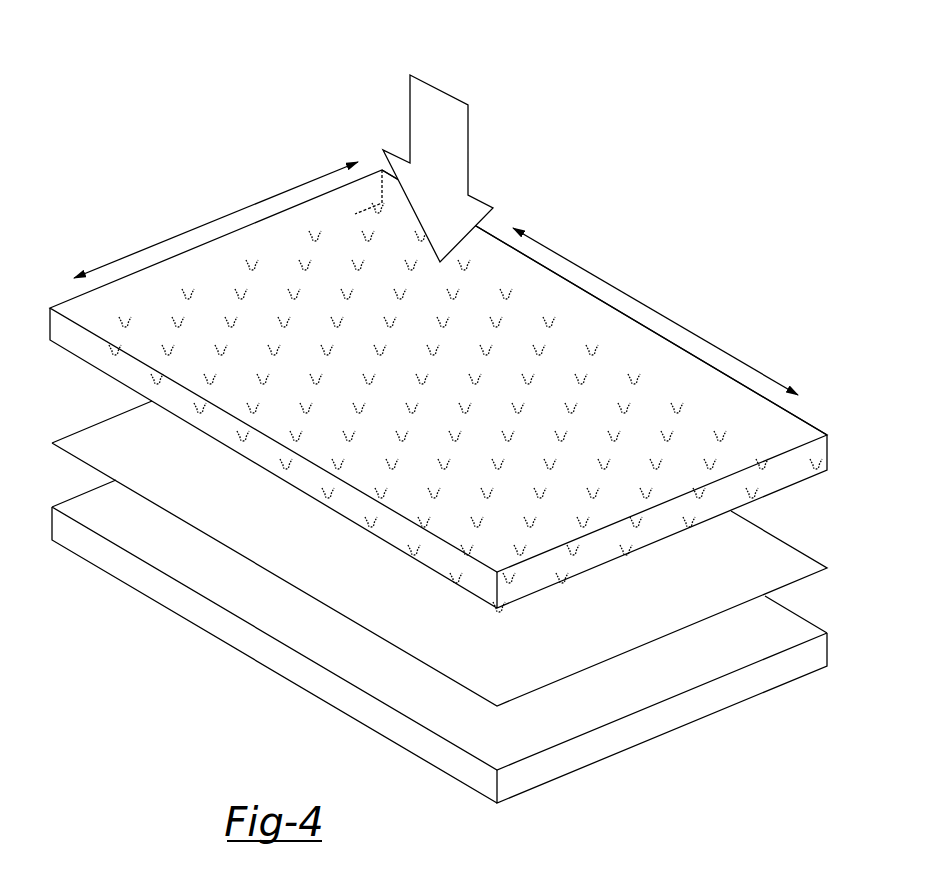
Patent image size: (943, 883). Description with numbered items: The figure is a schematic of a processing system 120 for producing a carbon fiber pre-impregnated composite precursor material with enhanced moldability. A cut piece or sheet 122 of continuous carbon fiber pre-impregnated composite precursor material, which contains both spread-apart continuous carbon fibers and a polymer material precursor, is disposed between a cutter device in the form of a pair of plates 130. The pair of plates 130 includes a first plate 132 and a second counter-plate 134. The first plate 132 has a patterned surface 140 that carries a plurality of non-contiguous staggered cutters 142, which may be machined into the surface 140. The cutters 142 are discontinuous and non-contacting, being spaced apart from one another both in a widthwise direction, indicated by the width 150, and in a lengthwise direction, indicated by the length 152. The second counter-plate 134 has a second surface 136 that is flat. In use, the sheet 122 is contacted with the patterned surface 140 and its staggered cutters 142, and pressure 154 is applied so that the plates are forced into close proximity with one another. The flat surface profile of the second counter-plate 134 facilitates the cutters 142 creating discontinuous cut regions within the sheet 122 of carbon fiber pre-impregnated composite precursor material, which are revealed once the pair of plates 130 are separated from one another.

The processing system 120 is at (183, 125).
The sheet 122 is at (772, 533).
The pair of plates 130 is at (438, 496).
The first plate 132 is at (695, 355).
The second counter-plate 134 is at (588, 748).
The second surface 136 is at (492, 753).
The patterned surface 140 is at (465, 365).
The non-contiguous staggered cutters 142 is at (322, 240).
The width 150 is at (198, 227).
The length 152 is at (578, 267).
The pressure 154 is at (443, 102).